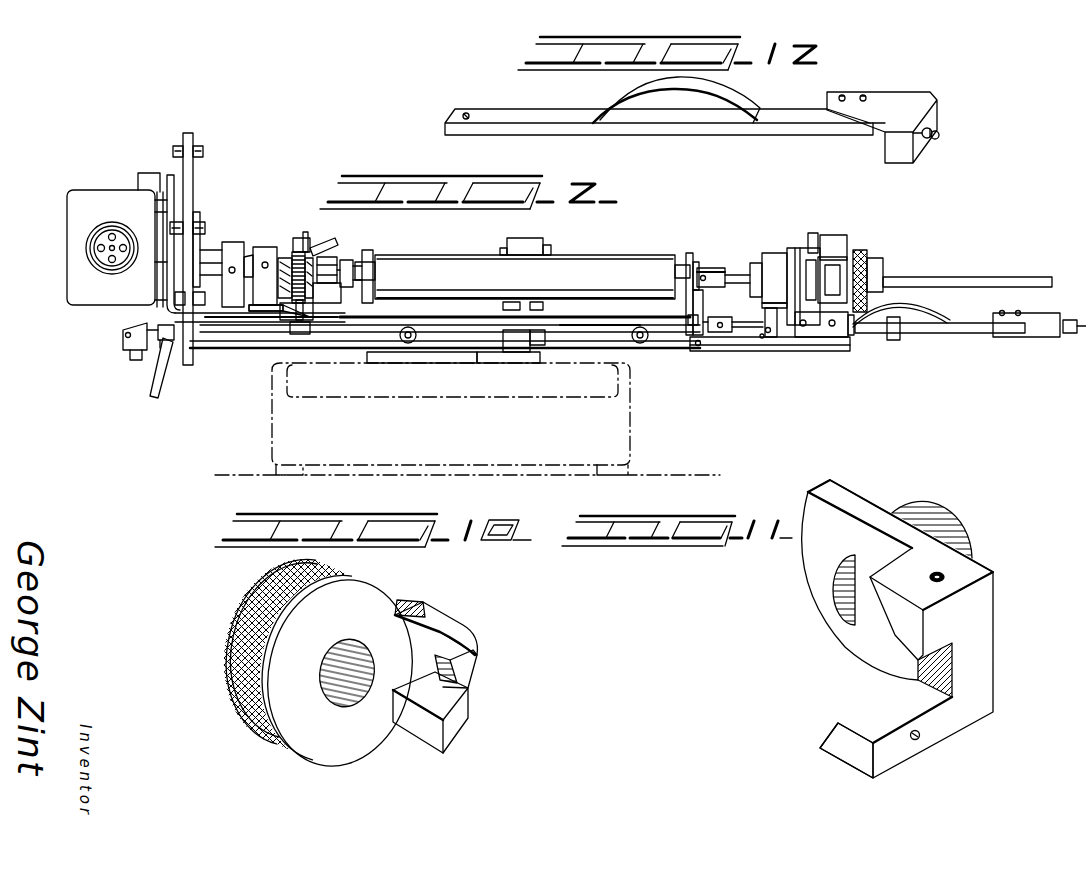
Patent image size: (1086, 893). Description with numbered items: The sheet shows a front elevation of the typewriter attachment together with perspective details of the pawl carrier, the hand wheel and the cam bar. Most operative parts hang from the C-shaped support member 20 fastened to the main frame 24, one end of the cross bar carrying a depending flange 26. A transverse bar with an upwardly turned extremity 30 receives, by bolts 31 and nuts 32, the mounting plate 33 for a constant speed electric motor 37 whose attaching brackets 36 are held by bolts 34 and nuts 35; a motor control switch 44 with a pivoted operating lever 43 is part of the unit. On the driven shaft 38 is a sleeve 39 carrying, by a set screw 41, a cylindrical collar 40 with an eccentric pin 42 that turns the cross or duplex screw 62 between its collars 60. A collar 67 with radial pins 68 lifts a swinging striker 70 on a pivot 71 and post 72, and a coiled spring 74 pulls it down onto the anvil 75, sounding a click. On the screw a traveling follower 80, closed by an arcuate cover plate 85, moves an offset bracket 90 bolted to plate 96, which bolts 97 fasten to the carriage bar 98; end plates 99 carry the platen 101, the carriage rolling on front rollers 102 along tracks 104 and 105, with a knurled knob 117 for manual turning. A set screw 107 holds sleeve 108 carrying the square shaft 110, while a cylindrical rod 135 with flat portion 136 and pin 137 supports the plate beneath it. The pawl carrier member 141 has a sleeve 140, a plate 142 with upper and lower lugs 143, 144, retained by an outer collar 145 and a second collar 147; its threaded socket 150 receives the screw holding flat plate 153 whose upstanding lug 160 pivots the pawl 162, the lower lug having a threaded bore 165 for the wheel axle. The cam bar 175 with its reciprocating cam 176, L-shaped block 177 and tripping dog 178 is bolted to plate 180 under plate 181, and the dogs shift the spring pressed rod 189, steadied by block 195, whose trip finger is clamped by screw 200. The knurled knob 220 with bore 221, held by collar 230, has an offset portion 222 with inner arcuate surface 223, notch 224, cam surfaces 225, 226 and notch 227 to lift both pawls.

In FIG. 2, the C-shaped support or frame member 20 is at (410, 353).
In FIG. 2, the main frame 24 is at (632, 428).
In FIG. 2, the depending flange 26 is at (370, 357).
In FIG. 2, the upwardly turned extremity 30 is at (212, 250).
In FIG. 2, the bolts 31 is at (202, 215).
In FIG. 2, the nuts 32 is at (178, 228).
In FIG. 2, the mounting plate 33 is at (193, 180).
In FIG. 2, the bolts 34 is at (195, 150).
In FIG. 2, the nuts 35 is at (178, 148).
In FIG. 2, the attaching brackets 36 is at (165, 342).
In FIG. 2, the constant speed electric motor 37 is at (88, 205).
In FIG. 2, the constant speed driven shaft 38 is at (160, 272).
In FIG. 2, the sleeve 39 is at (232, 242).
In FIG. 2, the cylindrical collar 40 is at (266, 247).
In FIG. 2, the set screw 41 is at (232, 274).
In FIG. 2, the pin 42 is at (295, 252).
In FIG. 2, the pivoted operating lever 43 is at (153, 388).
In FIG. 2, the motor control switch 44 is at (135, 350).
In FIG. 2, the collars 60 is at (350, 265).
In FIG. 2, the cross or duplex screw 62 is at (370, 258).
In FIG. 2, the collar 67 is at (312, 243).
In FIG. 2, the radial pins 68 is at (305, 232).
In FIG. 2, the swinging striker 70 is at (332, 244).
In FIG. 2, the pivot 71 is at (267, 261).
In FIG. 2, the post 72 is at (264, 306).
In FIG. 2, the coiled spring 74 is at (293, 306).
In FIG. 2, the anvil or sounding member 75 is at (335, 265).
In FIG. 2, the traveling nut member or follower 80 is at (503, 250).
In FIG. 2, the arcuate cover plate 85 is at (522, 240).
In FIG. 2, the offset bracket 90 is at (503, 306).
In FIG. 2, the forwardly and rearwardly extending plate 96 is at (522, 352).
In FIG. 2, the bolts 97 is at (540, 342).
In FIG. 2, the bar 98 is at (600, 327).
In FIG. 2, the upright end plates 99 is at (687, 265).
In FIG. 2, the typewriter platen 101 is at (578, 263).
In FIG. 2, the front grooved rollers 102 is at (416, 342).
In FIG. 2, the front cylindrical track 104 is at (328, 350).
In FIG. 2, the rear cylindrical track 105 is at (302, 334).
In FIG. 2, the set screw 107 is at (695, 260).
In FIG. 2, the sleeve 108 is at (705, 268).
In FIG. 2, the square shaft 110 is at (998, 277).
In FIG. 2, the knurled knob 117 is at (300, 308).
In FIG. 2, the cylindrical rod 135 is at (773, 345).
In FIG. 2, the flat portion 136 is at (820, 351).
In FIG. 2, the pin 137 is at (849, 338).
In FIG. 11, the sleeve 140 is at (938, 520).
In FIG. 11, the irregularly shaped member 141 is at (884, 491).
In FIG. 11, the plate 142 is at (835, 490).
In FIG. 11, the upper lug 143 is at (917, 590).
In FIG. 11, the lower lug 144 is at (872, 720).
In FIG. 2, the outer collar 145 is at (752, 264).
In FIG. 2, the second collar 147 is at (770, 260).
In FIG. 11, the threaded socket 150 is at (945, 580).
In FIG. 2, the flat plate or bar 153 is at (795, 248).
In FIG. 2, the upstanding lug 160 is at (812, 233).
In FIG. 2, the ratchet dog or pawl 162 is at (830, 235).
In FIG. 11, the horizontal threaded bore 165 is at (922, 738).
In FIG. 12, the bar 175 is at (515, 120).
In FIG. 2, the bar 175 is at (972, 335).
In FIG. 12, the reciprocating cam 176 is at (655, 100).
In FIG. 2, the reciprocating cam 176 is at (920, 315).
In FIG. 12, the L-shaped block 177 is at (905, 100).
In FIG. 2, the L-shaped block 177 is at (1035, 322).
In FIG. 12, the tripping dog 178 is at (940, 134).
In FIG. 2, the tripping dog 178 is at (1050, 335).
In FIG. 2, the plate 180 is at (690, 315).
In FIG. 2, the plate 181 is at (718, 319).
In FIG. 2, the spring pressed rod 189 is at (766, 334).
In FIG. 2, the block 195 is at (893, 340).
In FIG. 2, the bolt or screw 200 is at (762, 340).
In FIG. 2, the knurled knob 220 is at (860, 250).
In FIG. 10, the knurled knob 220 is at (282, 616).
In FIG. 10, the bore 221 is at (337, 693).
In FIG. 10, the offset portion 222 is at (458, 720).
In FIG. 10, the inner arcuate surface 223 is at (437, 697).
In FIG. 10, the notch 224 is at (452, 670).
In FIG. 10, the cam surface 225 is at (470, 693).
In FIG. 10, the cam surface 226 is at (440, 622).
In FIG. 10, the notch 227 is at (413, 612).
In FIG. 2, the collar 230 is at (878, 260).